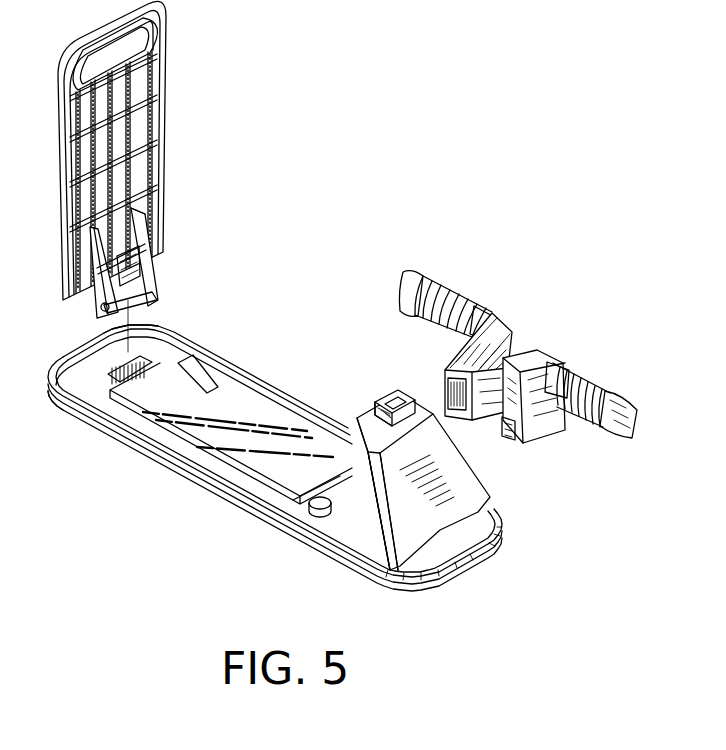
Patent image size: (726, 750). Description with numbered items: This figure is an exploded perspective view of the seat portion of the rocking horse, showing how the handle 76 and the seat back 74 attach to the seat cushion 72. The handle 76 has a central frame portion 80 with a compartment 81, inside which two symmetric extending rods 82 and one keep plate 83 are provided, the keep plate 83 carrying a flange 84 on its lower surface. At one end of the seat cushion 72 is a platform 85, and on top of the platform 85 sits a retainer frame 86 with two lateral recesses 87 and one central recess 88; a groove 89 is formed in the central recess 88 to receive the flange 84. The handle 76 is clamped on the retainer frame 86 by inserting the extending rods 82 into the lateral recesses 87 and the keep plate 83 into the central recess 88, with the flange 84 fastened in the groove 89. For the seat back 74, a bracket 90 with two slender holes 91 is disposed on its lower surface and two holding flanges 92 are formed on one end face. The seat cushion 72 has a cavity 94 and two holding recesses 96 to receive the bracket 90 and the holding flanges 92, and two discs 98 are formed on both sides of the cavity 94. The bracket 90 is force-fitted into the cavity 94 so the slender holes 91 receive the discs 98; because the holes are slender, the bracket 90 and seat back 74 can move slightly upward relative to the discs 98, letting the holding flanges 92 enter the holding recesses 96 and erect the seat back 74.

The seat cushion 72 is at (256, 398).
The seat back 74 is at (143, 124).
The handle 76 is at (443, 288).
The central frame portion 80 is at (542, 434).
The compartment 81 is at (487, 415).
The extending rods 82 is at (492, 428).
The keep plate 83 is at (500, 360).
The flange 84 is at (510, 448).
The platform 85 is at (458, 537).
The retainer frame 86 is at (412, 405).
The lateral recesses 87 is at (364, 455).
The central recess 88 is at (401, 410).
The groove 89 is at (380, 404).
The bracket 90 is at (152, 268).
The slender holes 91 is at (101, 311).
The holding flanges 92 is at (163, 248).
The cavity 94 is at (141, 331).
The holding recesses 96 is at (78, 392).
The discs 98 is at (150, 372).